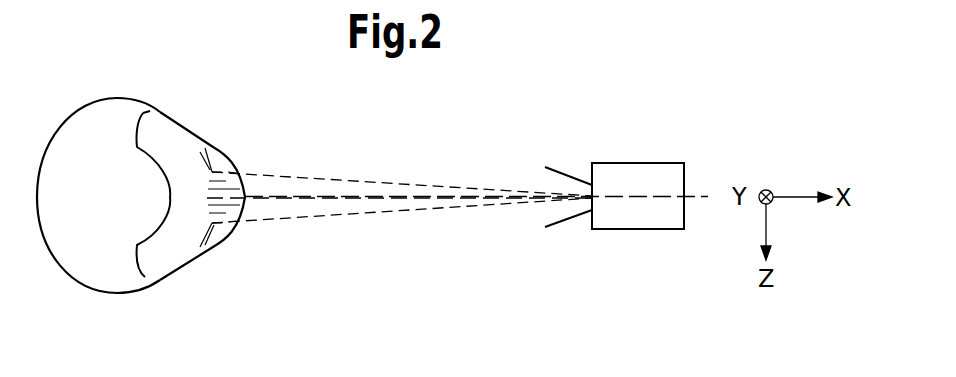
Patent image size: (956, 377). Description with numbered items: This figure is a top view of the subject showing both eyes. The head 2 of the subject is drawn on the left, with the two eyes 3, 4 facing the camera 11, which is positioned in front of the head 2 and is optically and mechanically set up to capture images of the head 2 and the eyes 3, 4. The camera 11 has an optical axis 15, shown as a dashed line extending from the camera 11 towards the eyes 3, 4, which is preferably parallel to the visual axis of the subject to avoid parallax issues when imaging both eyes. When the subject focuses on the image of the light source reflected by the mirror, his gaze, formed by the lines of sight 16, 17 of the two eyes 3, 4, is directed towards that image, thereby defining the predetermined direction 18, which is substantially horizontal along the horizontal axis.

The head 2 is at (53, 267).
The eye 3 is at (211, 223).
The eye 4 is at (211, 172).
The camera 11 is at (615, 163).
The optical axis 15 is at (412, 197).
The line of sight 16 is at (263, 220).
The line of sight 17 is at (280, 176).
The predetermined direction 18 is at (343, 200).